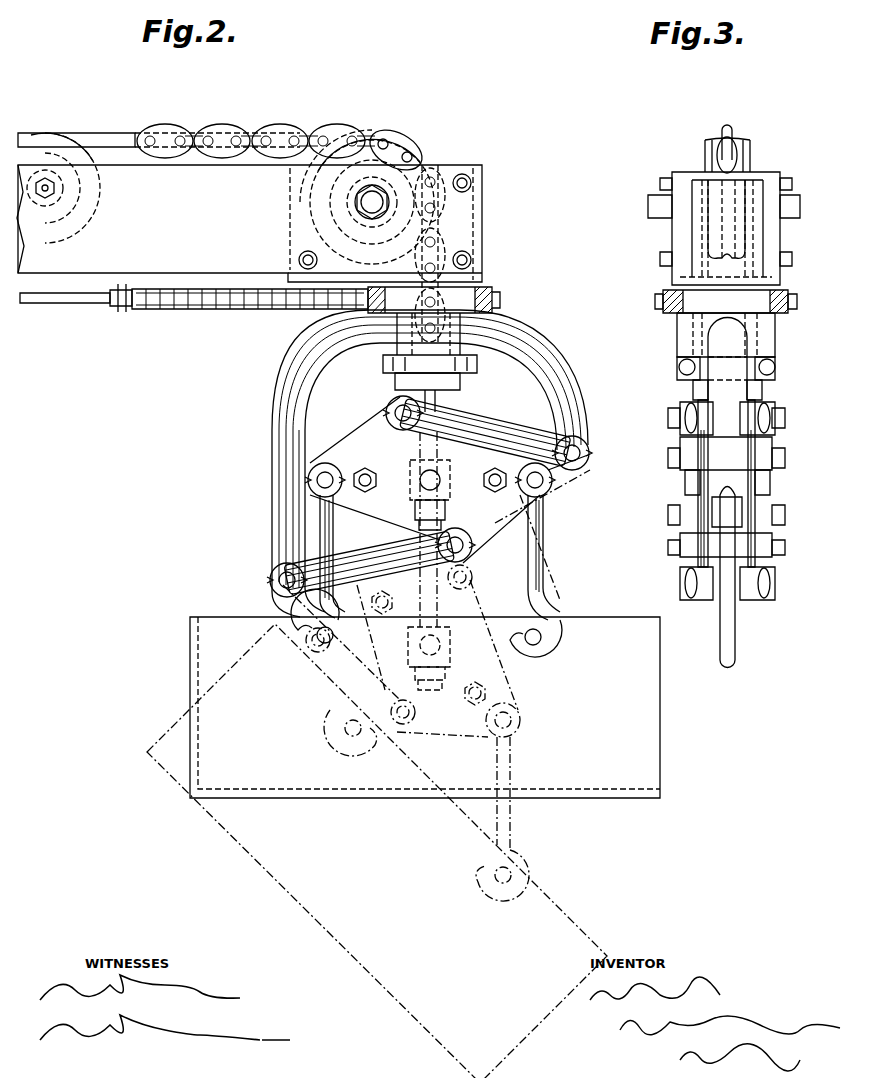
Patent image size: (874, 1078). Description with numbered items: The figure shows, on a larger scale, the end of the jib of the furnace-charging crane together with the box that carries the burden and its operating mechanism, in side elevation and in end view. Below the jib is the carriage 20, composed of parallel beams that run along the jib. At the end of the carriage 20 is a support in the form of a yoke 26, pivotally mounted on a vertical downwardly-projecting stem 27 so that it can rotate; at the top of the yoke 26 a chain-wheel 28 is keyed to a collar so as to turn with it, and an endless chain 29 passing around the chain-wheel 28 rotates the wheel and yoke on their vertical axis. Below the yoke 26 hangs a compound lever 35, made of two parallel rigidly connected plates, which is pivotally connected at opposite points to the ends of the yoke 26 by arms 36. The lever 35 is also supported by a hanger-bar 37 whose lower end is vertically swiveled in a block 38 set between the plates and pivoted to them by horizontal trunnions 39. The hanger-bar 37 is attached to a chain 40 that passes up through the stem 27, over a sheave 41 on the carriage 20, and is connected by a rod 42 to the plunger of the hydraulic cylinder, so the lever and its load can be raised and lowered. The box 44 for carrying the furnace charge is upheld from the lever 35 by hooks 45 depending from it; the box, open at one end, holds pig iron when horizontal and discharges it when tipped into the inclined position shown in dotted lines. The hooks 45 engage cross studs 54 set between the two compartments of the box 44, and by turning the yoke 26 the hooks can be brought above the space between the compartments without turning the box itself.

In FIG. 2, the carriage 20 is at (249, 207).
In FIG. 3, the carriage 20 is at (681, 232).
In FIG. 2, the yoke 26 is at (273, 432).
In FIG. 3, the yoke 26 is at (748, 612).
In FIG. 2, the stem 27 is at (398, 380).
In FIG. 3, the stem 27 is at (694, 384).
In FIG. 2, the chain-wheel 28 is at (490, 293).
In FIG. 3, the chain-wheel 28 is at (663, 296).
In FIG. 2, the endless chain 29 is at (228, 305).
In FIG. 2, the compound lever 35 is at (526, 686).
In FIG. 3, the compound lever 35 is at (772, 392).
In FIG. 2, the arms 36 is at (514, 428).
In FIG. 3, the arms 36 is at (681, 432).
In FIG. 2, the hanger-bar 37 is at (440, 398).
In FIG. 2, the block 38 is at (452, 472).
In FIG. 2, the horizontal trunnions 39 is at (425, 483).
In FIG. 3, the horizontal trunnions 39 is at (766, 481).
In FIG. 2, the chain 40 is at (248, 136).
In FIG. 3, the chain 40 is at (727, 132).
In FIG. 2, the sheave 41 is at (368, 152).
In FIG. 3, the sheave 41 is at (748, 158).
In FIG. 2, the rod 42 is at (88, 142).
In FIG. 2, the box 44 is at (403, 847).
In FIG. 2, the hooks 45 is at (522, 822).
In FIG. 3, the hooks 45 is at (720, 636).
In FIG. 2, the cross studs 54 is at (543, 640).